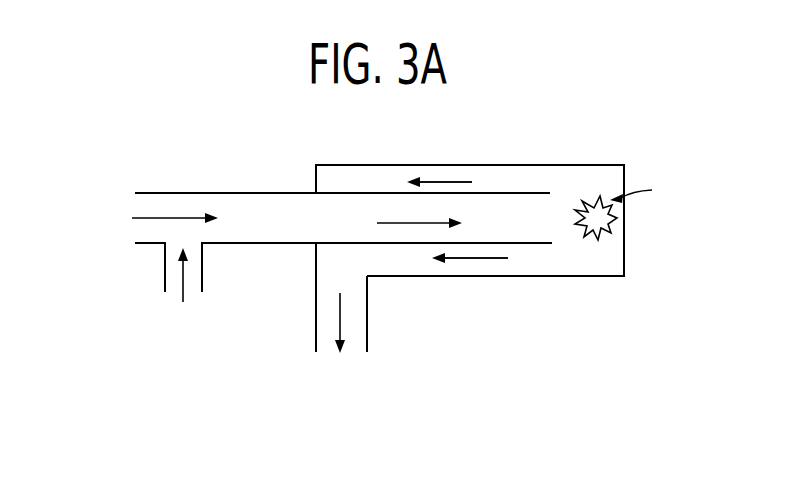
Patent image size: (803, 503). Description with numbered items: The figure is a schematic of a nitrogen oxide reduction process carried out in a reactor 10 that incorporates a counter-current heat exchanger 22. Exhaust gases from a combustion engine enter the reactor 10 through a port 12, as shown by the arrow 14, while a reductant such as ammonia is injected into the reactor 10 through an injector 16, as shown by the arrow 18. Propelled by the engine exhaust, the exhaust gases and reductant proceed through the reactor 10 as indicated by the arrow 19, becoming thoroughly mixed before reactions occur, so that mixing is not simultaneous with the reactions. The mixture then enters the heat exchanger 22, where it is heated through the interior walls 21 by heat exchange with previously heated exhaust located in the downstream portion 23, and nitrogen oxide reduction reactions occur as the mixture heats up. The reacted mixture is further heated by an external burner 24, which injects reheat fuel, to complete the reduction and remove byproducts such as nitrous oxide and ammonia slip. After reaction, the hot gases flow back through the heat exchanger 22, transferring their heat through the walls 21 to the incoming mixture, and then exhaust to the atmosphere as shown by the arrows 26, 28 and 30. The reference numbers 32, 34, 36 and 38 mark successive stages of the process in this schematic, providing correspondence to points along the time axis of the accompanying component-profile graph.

The reactor 10 is at (290, 181).
The port 12 is at (138, 205).
The arrow 14 is at (152, 219).
The injector 16 is at (205, 272).
The arrow 18 is at (183, 293).
The arrow 19 is at (405, 226).
The interior walls 21 is at (537, 192).
The counter-current heat exchanger 22 is at (498, 161).
The downstream portion 23 is at (482, 191).
The external burner 24 is at (608, 225).
The arrow 26 is at (440, 182).
The arrow 28 is at (480, 259).
The arrow 30 is at (387, 216).
The process stage reference 32 is at (237, 229).
The process stage reference 34 is at (476, 231).
The process stage reference 36 is at (546, 231).
The process stage reference 38 is at (331, 279).